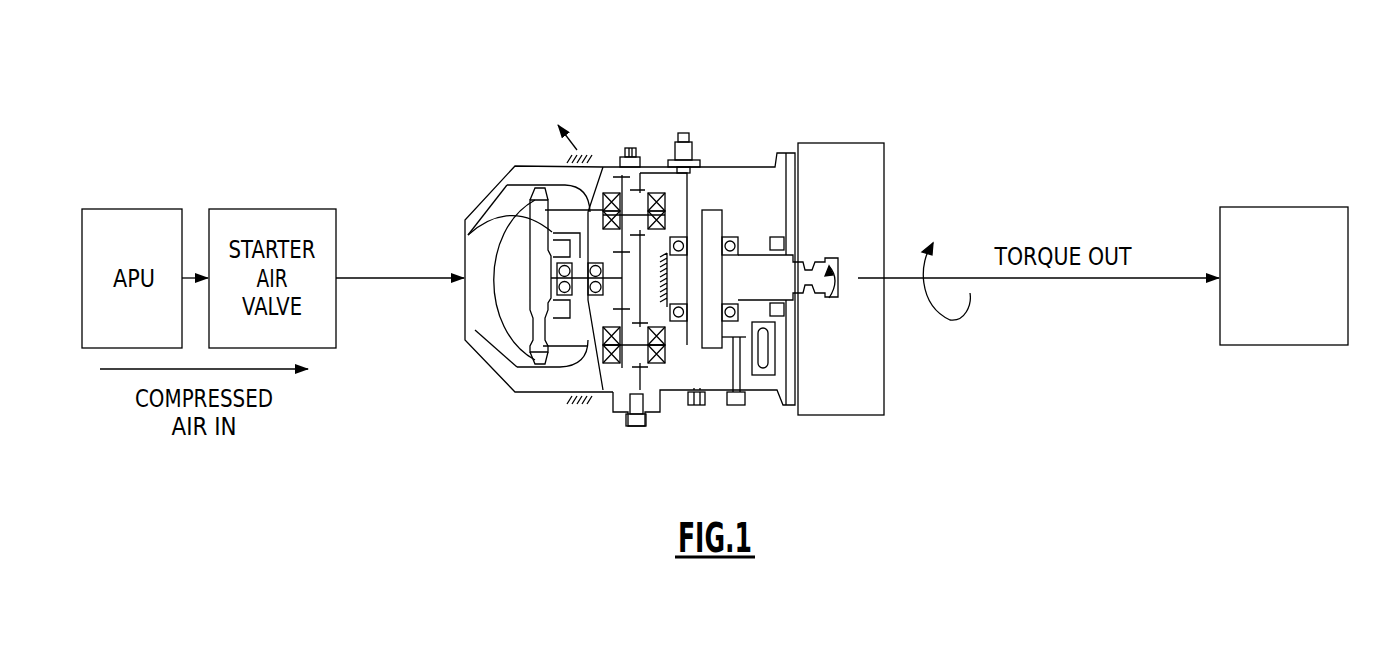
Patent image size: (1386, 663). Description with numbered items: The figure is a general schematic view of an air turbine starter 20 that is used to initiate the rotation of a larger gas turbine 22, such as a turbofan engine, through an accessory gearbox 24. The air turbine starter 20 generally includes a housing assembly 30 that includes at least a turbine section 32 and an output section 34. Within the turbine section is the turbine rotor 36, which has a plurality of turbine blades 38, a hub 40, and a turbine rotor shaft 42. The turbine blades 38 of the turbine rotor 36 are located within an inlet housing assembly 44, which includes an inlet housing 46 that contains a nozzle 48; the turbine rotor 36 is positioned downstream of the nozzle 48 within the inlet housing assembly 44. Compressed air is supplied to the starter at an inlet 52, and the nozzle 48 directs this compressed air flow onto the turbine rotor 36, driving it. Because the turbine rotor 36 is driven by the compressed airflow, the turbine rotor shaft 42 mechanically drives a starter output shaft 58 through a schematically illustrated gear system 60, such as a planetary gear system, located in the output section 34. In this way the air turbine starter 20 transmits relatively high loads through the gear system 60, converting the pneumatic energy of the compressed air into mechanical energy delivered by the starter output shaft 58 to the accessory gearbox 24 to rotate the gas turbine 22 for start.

The air turbine starter 20 is at (487, 141).
The gas turbine 22 is at (1290, 207).
The accessory gearbox 24 is at (858, 407).
The housing assembly 30 is at (613, 406).
The turbine section 32 is at (537, 109).
The output section 34 is at (746, 149).
The turbine rotor 36 is at (536, 299).
The turbine blades 38 is at (538, 192).
The hub 40 is at (523, 227).
The turbine rotor shaft 42 is at (576, 268).
The inlet housing assembly 44 is at (512, 394).
The inlet housing 46 is at (602, 341).
The nozzle 48 is at (622, 272).
The inlet 52 is at (651, 402).
The starter output shaft 58 is at (808, 260).
The gear system 60 is at (626, 199).